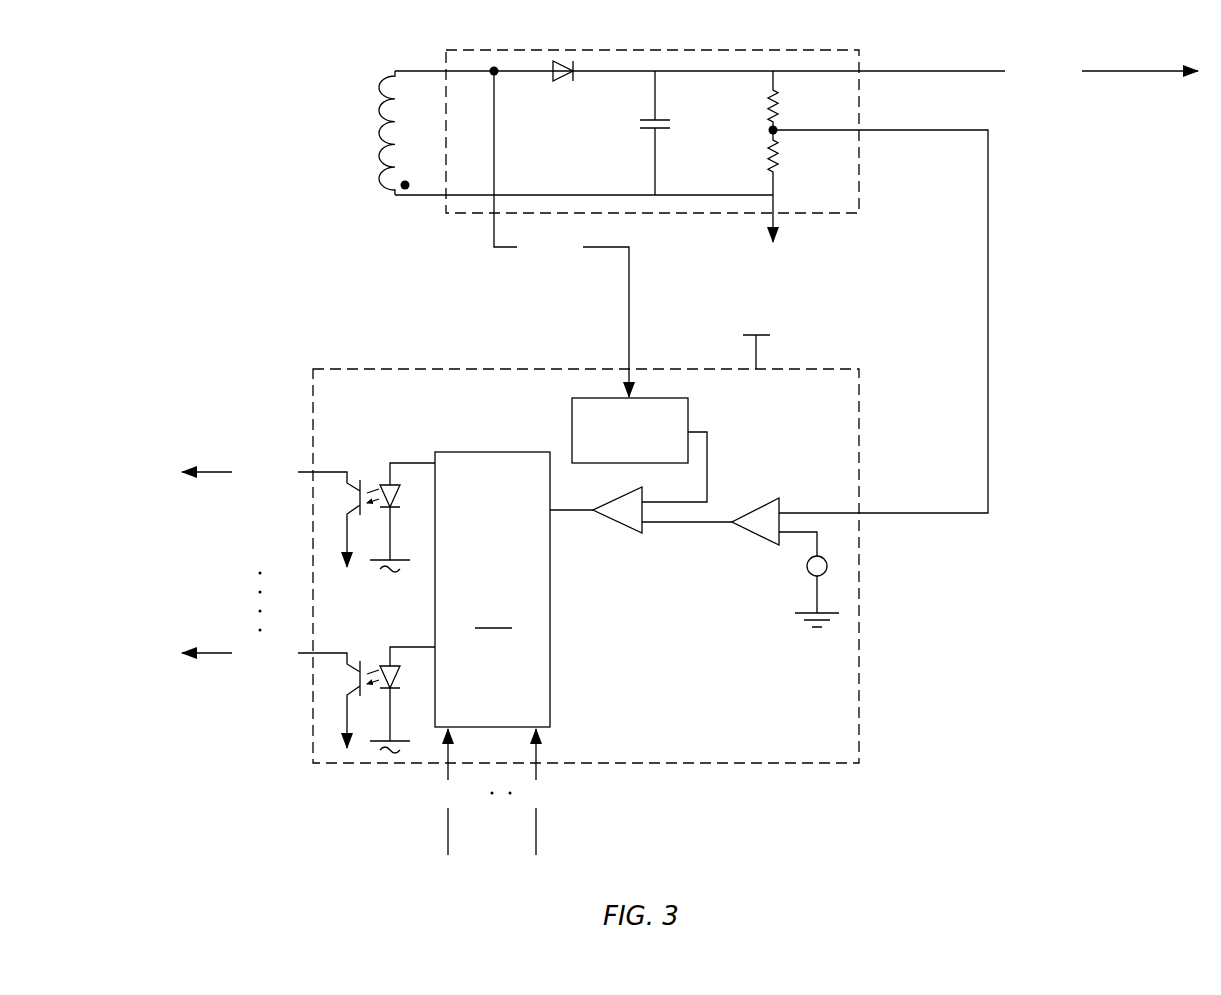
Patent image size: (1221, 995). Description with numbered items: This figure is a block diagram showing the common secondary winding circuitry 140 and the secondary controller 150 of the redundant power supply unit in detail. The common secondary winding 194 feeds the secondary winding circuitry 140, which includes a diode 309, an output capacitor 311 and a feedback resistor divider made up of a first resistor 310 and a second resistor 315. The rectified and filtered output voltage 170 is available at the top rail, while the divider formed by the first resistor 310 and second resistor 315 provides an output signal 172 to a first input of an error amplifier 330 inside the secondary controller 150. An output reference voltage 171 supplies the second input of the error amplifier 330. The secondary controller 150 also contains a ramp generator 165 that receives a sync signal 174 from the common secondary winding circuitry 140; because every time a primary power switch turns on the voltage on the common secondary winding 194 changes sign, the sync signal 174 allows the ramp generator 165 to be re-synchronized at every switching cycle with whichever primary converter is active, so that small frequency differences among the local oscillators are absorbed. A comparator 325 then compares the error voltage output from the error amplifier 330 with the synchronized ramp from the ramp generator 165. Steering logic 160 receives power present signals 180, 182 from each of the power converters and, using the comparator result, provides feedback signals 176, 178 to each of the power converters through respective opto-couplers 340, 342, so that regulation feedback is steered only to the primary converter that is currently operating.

The common secondary winding 194 is at (385, 66).
The common secondary winding circuitry 140 is at (718, 50).
The diode 309 is at (557, 85).
The output capacitor 311 is at (640, 124).
The first resistor 310 is at (762, 108).
The second resistor 315 is at (784, 155).
The output voltage 170 is at (1050, 47).
The output signal 172 is at (990, 333).
The sync signal 174 is at (550, 266).
The secondary controller 150 is at (373, 368).
The ramp generator 165 is at (572, 432).
The error amplifier 330 is at (760, 500).
The output reference voltage 171 is at (815, 548).
The comparator 325 is at (612, 523).
The steering logic 160 is at (492, 589).
The opto-coupler 342 is at (365, 463).
The opto-coupler 340 is at (363, 644).
The feedback signal 176 is at (267, 444).
The feedback signal 178 is at (262, 675).
The power present signal 180 is at (545, 814).
The power present signal 182 is at (430, 812).